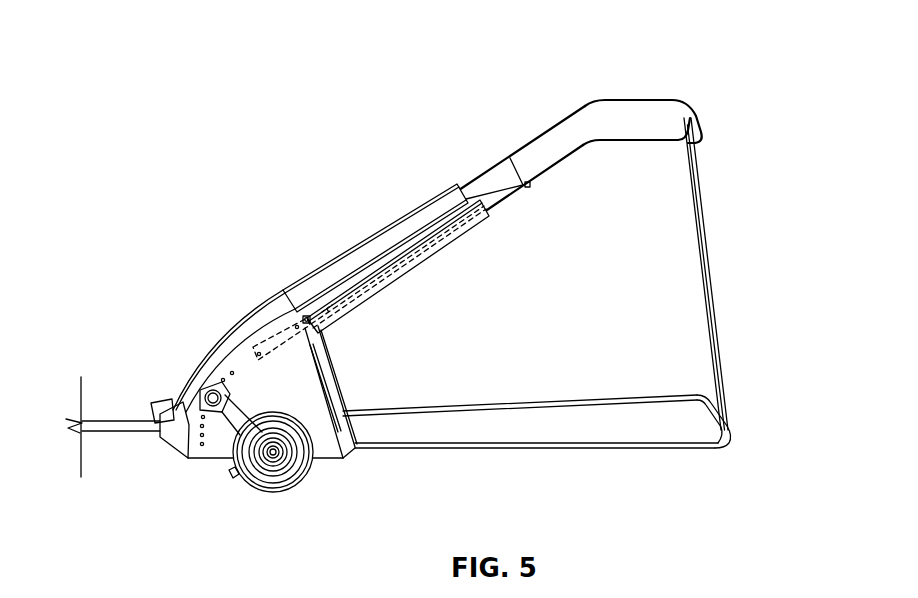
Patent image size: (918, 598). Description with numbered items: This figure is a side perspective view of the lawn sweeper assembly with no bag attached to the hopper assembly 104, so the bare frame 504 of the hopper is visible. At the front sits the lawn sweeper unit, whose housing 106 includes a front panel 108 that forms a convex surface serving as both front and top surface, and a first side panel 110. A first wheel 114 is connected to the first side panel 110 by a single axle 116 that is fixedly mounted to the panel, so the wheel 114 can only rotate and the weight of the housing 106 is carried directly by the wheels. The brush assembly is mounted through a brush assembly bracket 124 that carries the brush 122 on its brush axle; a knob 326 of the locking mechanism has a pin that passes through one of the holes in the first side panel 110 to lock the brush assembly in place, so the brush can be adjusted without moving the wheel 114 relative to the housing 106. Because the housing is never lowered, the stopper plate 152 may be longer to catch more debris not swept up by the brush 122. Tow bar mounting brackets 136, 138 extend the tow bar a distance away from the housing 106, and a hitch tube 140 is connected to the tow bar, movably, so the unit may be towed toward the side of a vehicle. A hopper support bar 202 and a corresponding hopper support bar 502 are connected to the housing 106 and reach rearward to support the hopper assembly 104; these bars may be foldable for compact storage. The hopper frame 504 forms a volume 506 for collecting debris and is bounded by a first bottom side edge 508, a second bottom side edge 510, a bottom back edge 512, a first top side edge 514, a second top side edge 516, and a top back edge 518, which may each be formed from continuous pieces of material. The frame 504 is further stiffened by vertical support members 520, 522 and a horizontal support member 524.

The hopper assembly 104 is at (620, 80).
The housing 106 is at (207, 343).
The front panel 108 is at (260, 318).
The first side panel 110 is at (328, 447).
The first wheel 114 is at (310, 467).
The axle 116 is at (277, 452).
The brush 122 is at (235, 478).
The brush assembly bracket 124 is at (223, 413).
The tow bar mounting bracket 136 is at (173, 433).
The tow bar mounting bracket 138 is at (165, 405).
The hitch tube 140 is at (110, 433).
The stopper plate 152 is at (350, 445).
The hopper support bar 202 is at (400, 270).
The knob 326 is at (207, 392).
The hopper support bar 502 is at (400, 233).
The frame 504 is at (746, 150).
The volume 506 is at (500, 180).
The first bottom side edge 508 is at (625, 448).
The second bottom side edge 510 is at (565, 400).
The bottom back edge 512 is at (728, 428).
The first top side edge 514 is at (625, 147).
The second top side edge 516 is at (633, 100).
The top back edge 518 is at (690, 117).
The vertical support member 520 is at (708, 277).
The vertical support member 522 is at (693, 240).
The horizontal support member 524 is at (522, 158).